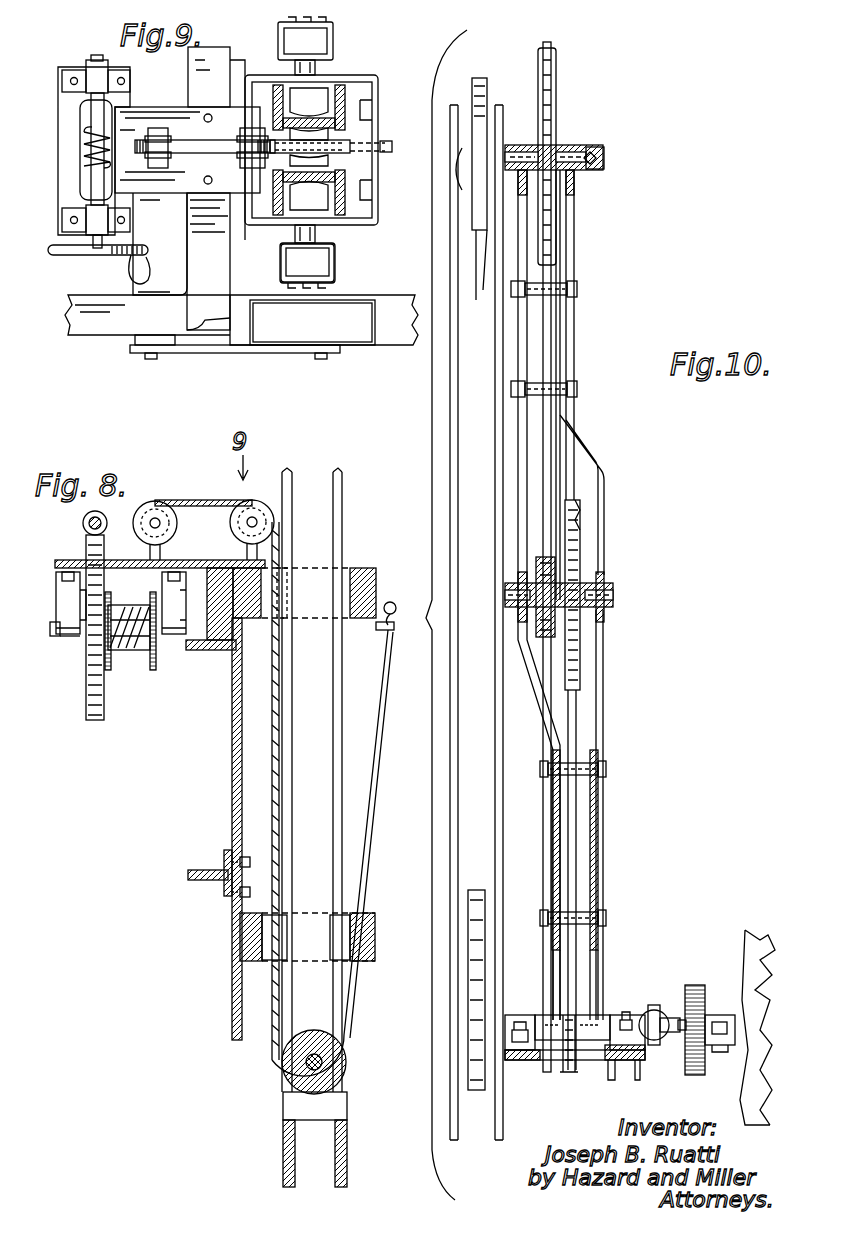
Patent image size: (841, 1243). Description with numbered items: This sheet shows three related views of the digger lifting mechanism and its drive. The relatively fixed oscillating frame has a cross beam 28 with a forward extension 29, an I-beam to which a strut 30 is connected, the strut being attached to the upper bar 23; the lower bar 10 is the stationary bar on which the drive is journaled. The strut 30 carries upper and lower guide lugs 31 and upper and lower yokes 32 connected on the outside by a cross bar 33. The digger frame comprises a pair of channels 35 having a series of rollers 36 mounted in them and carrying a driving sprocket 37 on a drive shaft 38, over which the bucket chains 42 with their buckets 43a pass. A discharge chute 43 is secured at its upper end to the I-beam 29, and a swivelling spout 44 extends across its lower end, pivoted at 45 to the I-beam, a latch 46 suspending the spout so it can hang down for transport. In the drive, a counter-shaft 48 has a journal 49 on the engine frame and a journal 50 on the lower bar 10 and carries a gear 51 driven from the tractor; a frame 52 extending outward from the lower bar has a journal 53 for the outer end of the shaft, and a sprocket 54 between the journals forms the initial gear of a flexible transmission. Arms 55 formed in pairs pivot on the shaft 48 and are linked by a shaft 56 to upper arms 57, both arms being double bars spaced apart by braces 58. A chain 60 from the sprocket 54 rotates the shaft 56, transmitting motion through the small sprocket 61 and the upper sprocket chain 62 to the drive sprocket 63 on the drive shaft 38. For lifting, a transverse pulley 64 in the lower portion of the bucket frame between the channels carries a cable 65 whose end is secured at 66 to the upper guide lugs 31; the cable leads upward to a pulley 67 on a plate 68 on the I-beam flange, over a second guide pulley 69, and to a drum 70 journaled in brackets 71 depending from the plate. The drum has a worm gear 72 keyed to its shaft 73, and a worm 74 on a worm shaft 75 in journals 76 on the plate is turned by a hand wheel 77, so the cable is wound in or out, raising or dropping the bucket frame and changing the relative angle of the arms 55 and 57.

In FIG. 10, the stationary lower bar 10 is at (640, 1080).
In FIG. 8, the upper bar 23 is at (204, 872).
In FIG. 9, the cross beam 28 is at (195, 236).
In FIG. 9, the forward extension (I-beam) 29 is at (200, 276).
In FIG. 8, the forward extension (I-beam) 29 is at (205, 652).
In FIG. 9, the strut 30 is at (236, 240).
In FIG. 8, the strut 30 is at (232, 786).
In FIG. 9, the guide lugs 31 is at (358, 127).
In FIG. 8, the guide lugs 31 is at (290, 590).
In FIG. 9, the yokes 32 is at (383, 220).
In FIG. 8, the yokes 32 is at (362, 568).
In FIG. 9, the cross bar 33 is at (378, 182).
In FIG. 8, the cross bar 33 is at (378, 628).
In FIG. 9, the channels 35 is at (340, 85).
In FIG. 8, the channels 35 is at (330, 500).
In FIG. 9, the rollers 36 is at (312, 95).
In FIG. 10, the driving sprocket 37 is at (480, 82).
In FIG. 10, the drive shaft 38 is at (572, 148).
In FIG. 9, the bucket chains 42 is at (316, 234).
In FIG. 9, the discharge chute 43 is at (336, 275).
In FIG. 9, the buckets 43a is at (230, 322).
In FIG. 9, the swivelling spout 44 is at (392, 340).
In FIG. 9, the pivot 45 is at (152, 360).
In FIG. 9, the latch 46 is at (302, 355).
In FIG. 10, the counter-shaft 48 is at (662, 1040).
In FIG. 10, the journal 49 is at (718, 1018).
In FIG. 10, the journal 50 is at (628, 1010).
In FIG. 10, the gear 51 is at (700, 985).
In FIG. 10, the frame 52 is at (520, 1062).
In FIG. 10, the journal 53 is at (517, 1018).
In FIG. 10, the sprocket 54 is at (580, 1000).
In FIG. 10, the arms 55 is at (552, 836).
In FIG. 10, the shaft 56 is at (614, 596).
In FIG. 10, the upper arms 57 is at (592, 460).
In FIG. 10, the braces 58 is at (598, 768).
In FIG. 10, the chain 60 is at (578, 705).
In FIG. 10, the small sprocket 61 is at (545, 630).
In FIG. 10, the upper sprocket chain 62 is at (558, 440).
In FIG. 10, the drive sprocket 63 is at (560, 62).
In FIG. 9, the transverse pulley 64 is at (308, 170).
In FIG. 8, the transverse pulley 64 is at (330, 1055).
In FIG. 8, the cable 65 is at (378, 770).
In FIG. 9, the cable securing point 66 is at (396, 138).
In FIG. 8, the cable securing point 66 is at (393, 600).
In FIG. 9, the pulley 67 is at (252, 128).
In FIG. 8, the pulley 67 is at (256, 503).
In FIG. 9, the plate 68 is at (208, 110).
In FIG. 8, the plate 68 is at (205, 552).
In FIG. 9, the second guide pulley 69 is at (158, 128).
In FIG. 8, the second guide pulley 69 is at (160, 506).
In FIG. 8, the drum 70 is at (147, 660).
In FIG. 8, the brackets 71 is at (70, 598).
In FIG. 8, the worm gear 72 is at (87, 698).
In FIG. 8, the shaft 73 is at (53, 637).
In FIG. 9, the worm 74 is at (86, 155).
In FIG. 8, the worm 74 is at (83, 520).
In FIG. 9, the worm shaft 75 is at (98, 122).
In FIG. 8, the worm shaft 75 is at (84, 530).
In FIG. 9, the journals 76 is at (95, 70).
In FIG. 9, the hand wheel 77 is at (62, 252).